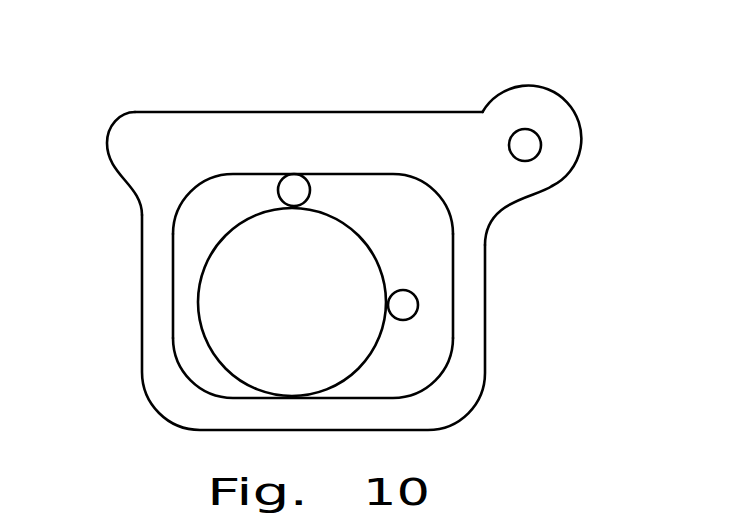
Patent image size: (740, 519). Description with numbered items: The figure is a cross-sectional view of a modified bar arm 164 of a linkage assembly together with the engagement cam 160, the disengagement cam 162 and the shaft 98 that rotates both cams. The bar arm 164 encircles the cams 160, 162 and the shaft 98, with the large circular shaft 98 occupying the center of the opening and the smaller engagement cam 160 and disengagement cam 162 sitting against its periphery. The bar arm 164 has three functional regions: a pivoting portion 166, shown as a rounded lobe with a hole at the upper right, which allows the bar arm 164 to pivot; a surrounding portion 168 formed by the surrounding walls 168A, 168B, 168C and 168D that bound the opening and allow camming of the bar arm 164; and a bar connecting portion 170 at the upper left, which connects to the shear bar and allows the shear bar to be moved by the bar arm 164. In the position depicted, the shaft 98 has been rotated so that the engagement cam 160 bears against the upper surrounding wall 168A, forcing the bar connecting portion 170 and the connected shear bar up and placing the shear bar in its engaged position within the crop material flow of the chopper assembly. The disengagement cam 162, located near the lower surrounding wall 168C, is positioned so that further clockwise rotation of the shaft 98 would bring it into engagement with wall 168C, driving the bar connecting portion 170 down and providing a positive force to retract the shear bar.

The shaft 98 is at (347, 255).
The engagement cam 160 is at (294, 190).
The disengagement cam 162 is at (407, 308).
The modified bar arm 164 is at (524, 224).
The pivoting portion 166 is at (550, 123).
The surrounding portion 168 is at (339, 101).
The surrounding wall 168A is at (349, 176).
The surrounding wall 168B is at (456, 312).
The surrounding wall 168C is at (365, 395).
The surrounding wall 168D is at (186, 301).
The bar connecting portion 170 is at (127, 132).